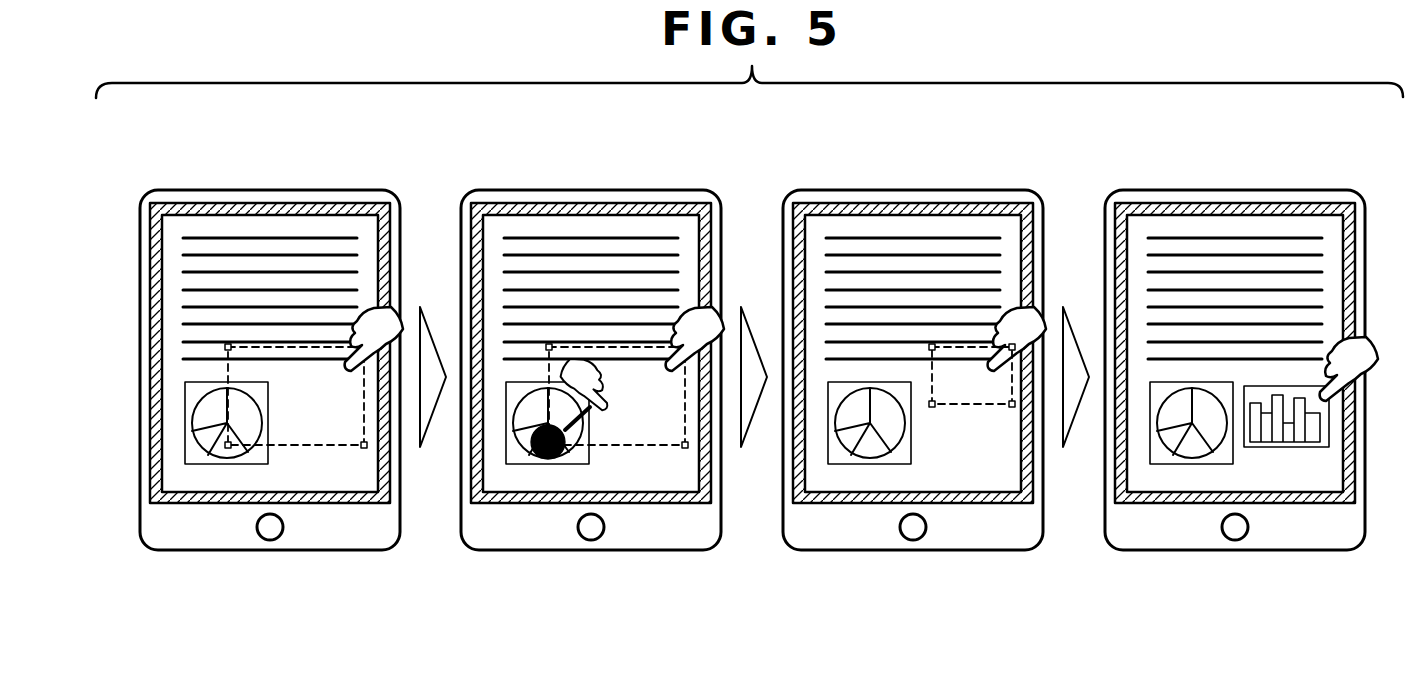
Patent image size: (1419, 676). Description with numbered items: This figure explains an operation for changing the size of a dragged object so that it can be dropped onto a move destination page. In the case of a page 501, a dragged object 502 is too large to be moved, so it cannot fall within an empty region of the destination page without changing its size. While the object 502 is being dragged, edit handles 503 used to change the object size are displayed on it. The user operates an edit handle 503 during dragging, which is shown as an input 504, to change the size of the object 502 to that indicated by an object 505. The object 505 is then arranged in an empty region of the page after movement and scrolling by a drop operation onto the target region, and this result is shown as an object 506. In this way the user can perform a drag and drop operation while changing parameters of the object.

The page 501 is at (253, 212).
The dragged object 502 is at (330, 447).
The edit handles 503 is at (229, 448).
The input 504 is at (548, 459).
The object 505 is at (973, 406).
The object 506 is at (1290, 448).